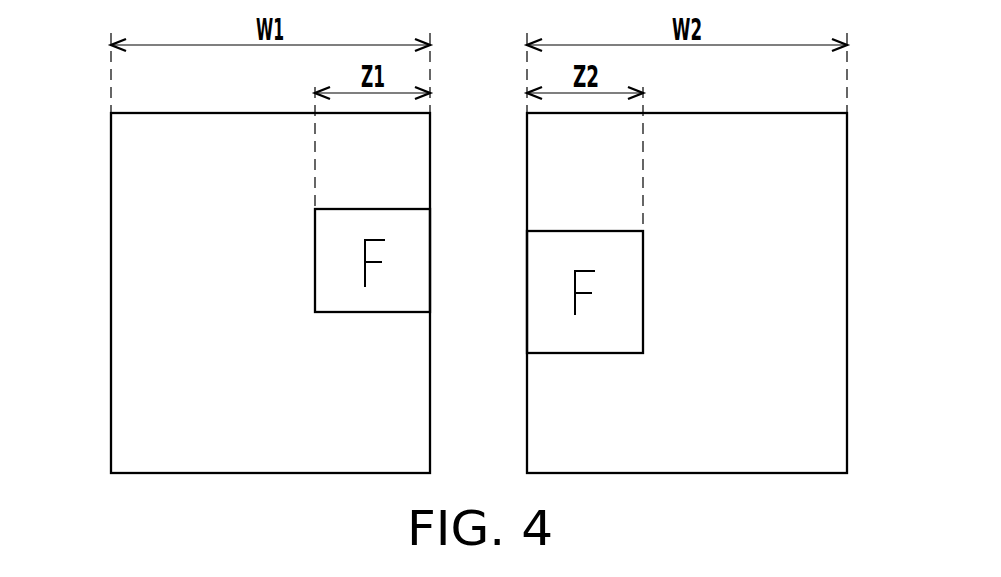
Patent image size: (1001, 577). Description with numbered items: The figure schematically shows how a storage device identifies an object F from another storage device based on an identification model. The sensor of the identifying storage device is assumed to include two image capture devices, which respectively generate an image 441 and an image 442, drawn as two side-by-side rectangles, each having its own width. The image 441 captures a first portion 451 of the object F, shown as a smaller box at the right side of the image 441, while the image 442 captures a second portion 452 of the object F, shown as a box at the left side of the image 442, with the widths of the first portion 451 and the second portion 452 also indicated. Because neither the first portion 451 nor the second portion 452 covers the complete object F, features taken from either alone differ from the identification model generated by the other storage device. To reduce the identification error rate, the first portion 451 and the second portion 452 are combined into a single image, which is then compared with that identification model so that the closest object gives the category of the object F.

The image 441 is at (111, 293).
The image 442 is at (847, 293).
The first portion 451 is at (365, 312).
The second portion 452 is at (590, 353).